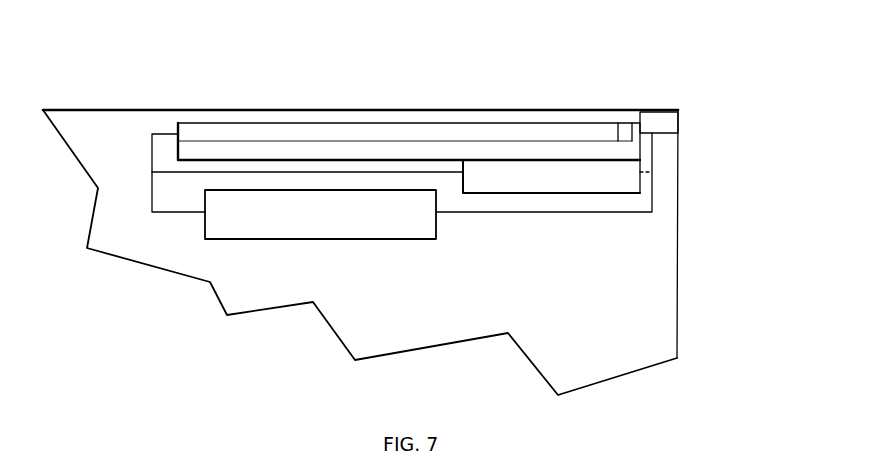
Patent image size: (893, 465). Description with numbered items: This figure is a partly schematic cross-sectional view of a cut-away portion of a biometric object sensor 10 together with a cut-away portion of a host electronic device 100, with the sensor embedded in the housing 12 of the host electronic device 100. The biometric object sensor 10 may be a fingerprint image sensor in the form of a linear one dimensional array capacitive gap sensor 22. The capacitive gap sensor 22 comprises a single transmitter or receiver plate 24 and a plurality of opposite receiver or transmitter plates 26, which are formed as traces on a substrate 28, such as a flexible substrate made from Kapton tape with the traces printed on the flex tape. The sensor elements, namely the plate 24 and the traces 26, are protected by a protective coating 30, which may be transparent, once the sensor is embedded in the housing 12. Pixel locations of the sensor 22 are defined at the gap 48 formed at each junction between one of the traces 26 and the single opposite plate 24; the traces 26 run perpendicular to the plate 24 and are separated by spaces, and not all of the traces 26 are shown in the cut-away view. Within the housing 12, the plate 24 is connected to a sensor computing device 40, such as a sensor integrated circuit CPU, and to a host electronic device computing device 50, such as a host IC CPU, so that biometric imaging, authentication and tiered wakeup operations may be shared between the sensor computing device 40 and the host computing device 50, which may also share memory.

The biometric object sensor 10 is at (603, 91).
The housing 12 is at (677, 295).
The linear one dimensional array capacitive gap sensor 22 is at (174, 126).
The transmitter or receiver plate 24 is at (681, 132).
The receiver or transmitter plates 26 is at (460, 133).
The substrate 28 is at (228, 149).
The protective coating 30 is at (321, 112).
The sensor computing device 40 is at (533, 183).
The gap 48 is at (636, 128).
The host electronic device computing device 50 is at (335, 223).
The host electronic device 100 is at (686, 353).